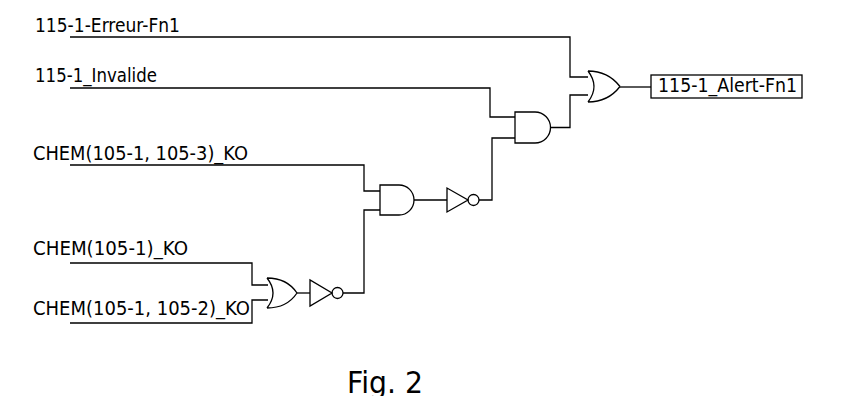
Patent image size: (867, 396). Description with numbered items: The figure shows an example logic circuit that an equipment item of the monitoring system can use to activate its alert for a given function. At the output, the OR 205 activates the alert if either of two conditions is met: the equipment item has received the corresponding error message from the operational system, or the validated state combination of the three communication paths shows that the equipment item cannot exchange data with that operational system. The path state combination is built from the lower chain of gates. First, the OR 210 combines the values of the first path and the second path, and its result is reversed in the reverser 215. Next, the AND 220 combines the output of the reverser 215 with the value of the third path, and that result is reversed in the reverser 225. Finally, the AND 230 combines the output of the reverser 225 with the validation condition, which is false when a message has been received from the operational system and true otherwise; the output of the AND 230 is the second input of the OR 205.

The OR 205 is at (612, 70).
The OR 210 is at (283, 278).
The reverser 215 is at (318, 304).
The AND 220 is at (408, 185).
The reverser 225 is at (453, 208).
The AND 230 is at (538, 143).